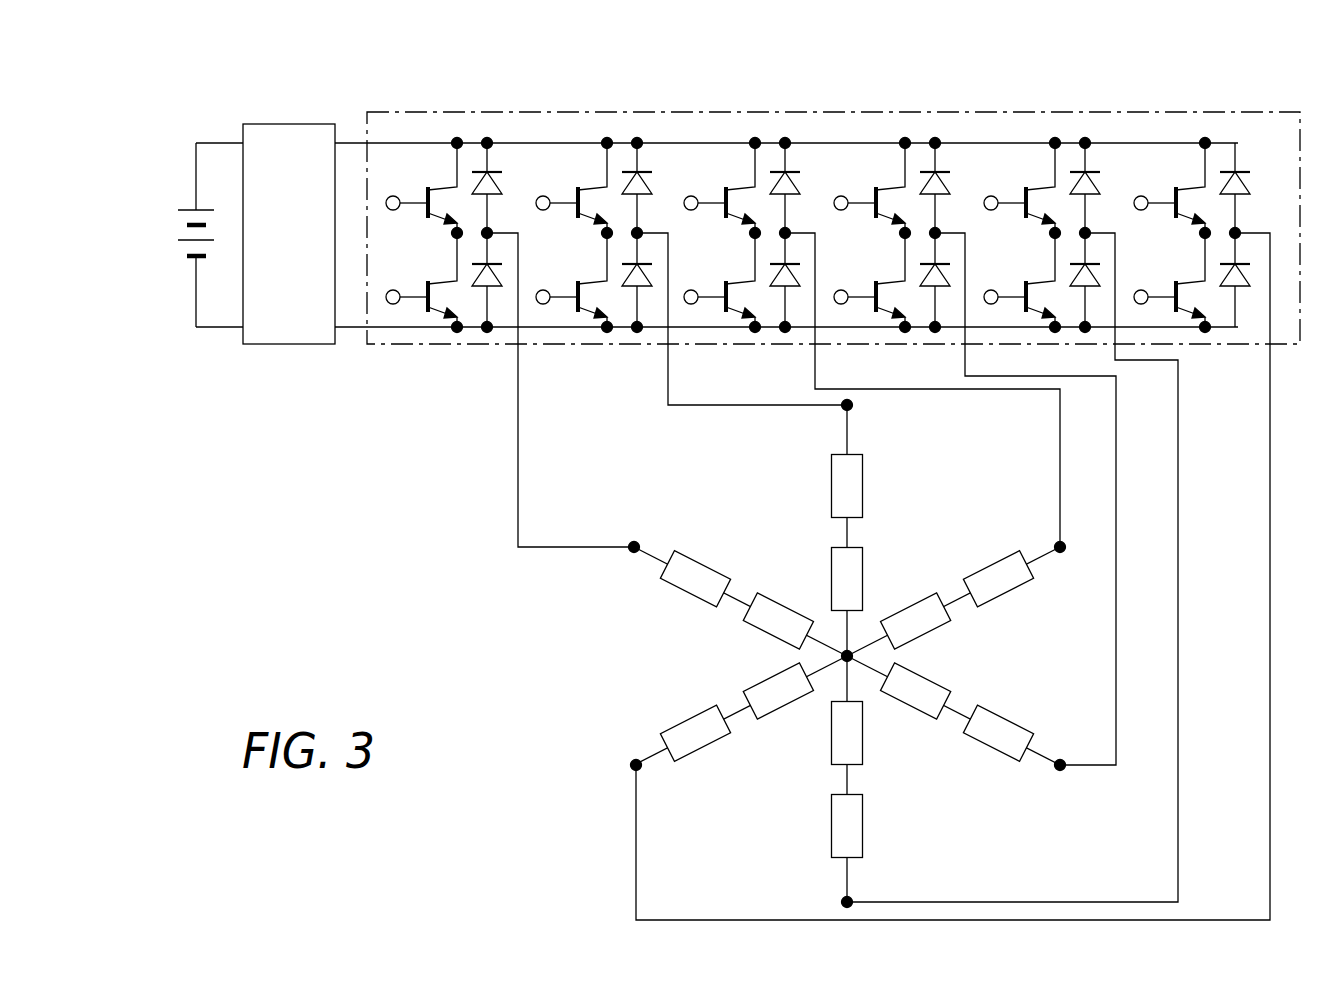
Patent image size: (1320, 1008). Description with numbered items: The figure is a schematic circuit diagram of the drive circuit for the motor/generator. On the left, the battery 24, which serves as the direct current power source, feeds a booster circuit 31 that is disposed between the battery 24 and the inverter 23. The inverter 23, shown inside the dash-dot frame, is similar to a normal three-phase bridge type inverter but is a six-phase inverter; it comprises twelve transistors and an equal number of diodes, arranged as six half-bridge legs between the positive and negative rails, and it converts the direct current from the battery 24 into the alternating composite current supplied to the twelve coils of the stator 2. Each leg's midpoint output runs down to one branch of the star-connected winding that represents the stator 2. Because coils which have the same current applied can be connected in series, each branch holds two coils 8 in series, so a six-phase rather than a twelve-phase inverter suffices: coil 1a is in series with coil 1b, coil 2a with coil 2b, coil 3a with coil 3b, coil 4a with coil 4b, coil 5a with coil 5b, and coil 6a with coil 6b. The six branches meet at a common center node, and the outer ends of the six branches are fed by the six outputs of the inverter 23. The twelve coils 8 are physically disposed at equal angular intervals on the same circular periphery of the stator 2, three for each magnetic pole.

The stator 2 is at (684, 638).
The coil 8 is at (712, 546).
The inverter 23 is at (1045, 120).
The battery 24 is at (183, 252).
The booster circuit 31 is at (263, 123).
The coil # 1a is at (695, 579).
The coil # 1b is at (778, 621).
The coil # 2a is at (847, 486).
The coil # 2b is at (847, 579).
The coil # 3a is at (998, 579).
The coil # 3b is at (915, 621).
The coil # 4a is at (998, 733).
The coil # 4b is at (915, 691).
The coil # 5a is at (847, 826).
The coil # 5b is at (847, 733).
The coil # 6a is at (695, 733).
The coil # 6b is at (778, 691).